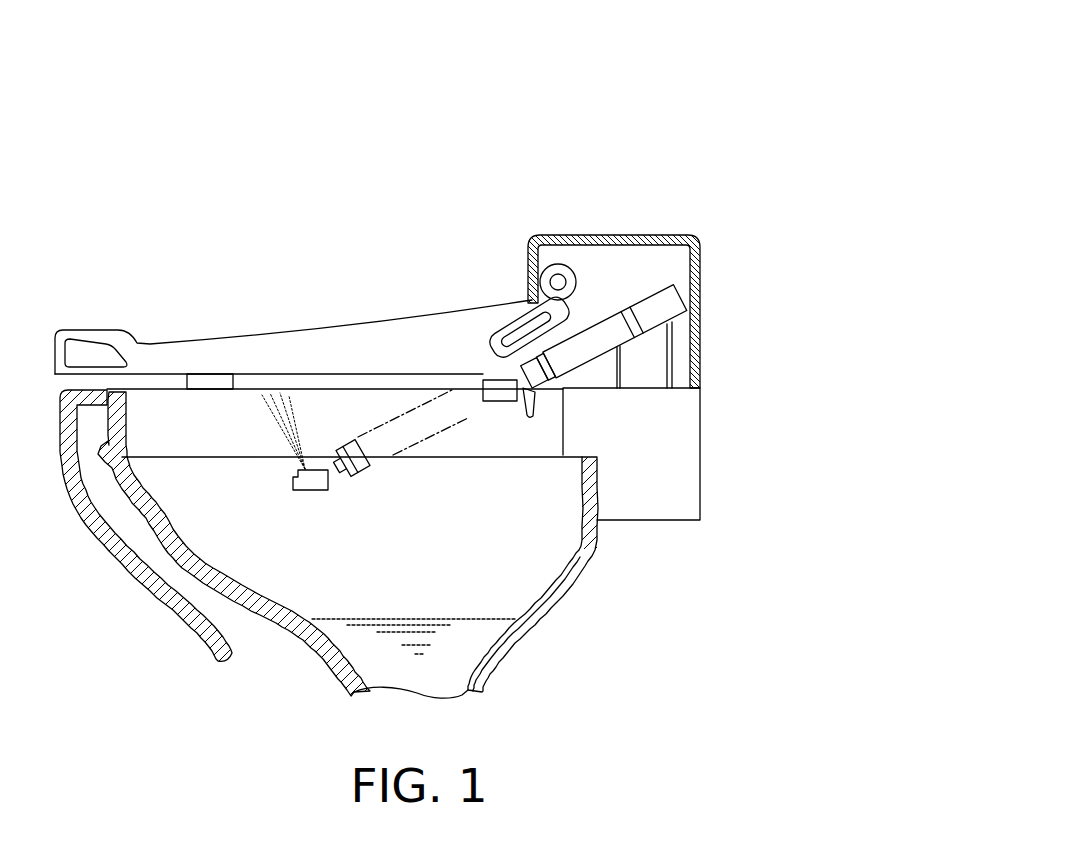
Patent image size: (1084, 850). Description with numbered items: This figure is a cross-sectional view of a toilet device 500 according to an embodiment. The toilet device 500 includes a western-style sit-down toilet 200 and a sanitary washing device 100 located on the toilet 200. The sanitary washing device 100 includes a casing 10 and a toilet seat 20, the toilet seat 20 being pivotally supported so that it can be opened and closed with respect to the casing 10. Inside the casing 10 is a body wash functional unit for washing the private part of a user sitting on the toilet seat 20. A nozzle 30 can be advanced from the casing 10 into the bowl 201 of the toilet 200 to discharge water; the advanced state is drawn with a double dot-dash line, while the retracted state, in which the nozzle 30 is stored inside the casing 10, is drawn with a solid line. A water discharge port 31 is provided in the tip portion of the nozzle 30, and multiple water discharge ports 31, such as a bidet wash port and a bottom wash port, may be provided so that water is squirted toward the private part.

The toilet device 500 is at (672, 94).
The sanitary washing device 100 is at (721, 304).
The casing 10 is at (643, 233).
The toilet seat 20 is at (147, 352).
The nozzle 30 is at (613, 315).
The water discharge port 31 is at (508, 380).
The toilet 200 is at (112, 550).
The bowl 201 is at (198, 517).